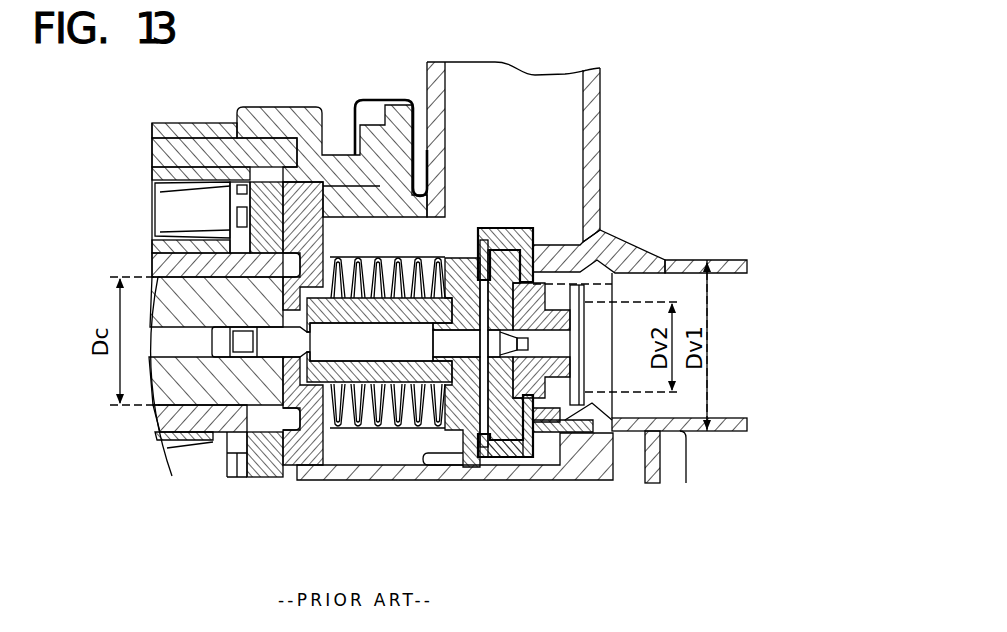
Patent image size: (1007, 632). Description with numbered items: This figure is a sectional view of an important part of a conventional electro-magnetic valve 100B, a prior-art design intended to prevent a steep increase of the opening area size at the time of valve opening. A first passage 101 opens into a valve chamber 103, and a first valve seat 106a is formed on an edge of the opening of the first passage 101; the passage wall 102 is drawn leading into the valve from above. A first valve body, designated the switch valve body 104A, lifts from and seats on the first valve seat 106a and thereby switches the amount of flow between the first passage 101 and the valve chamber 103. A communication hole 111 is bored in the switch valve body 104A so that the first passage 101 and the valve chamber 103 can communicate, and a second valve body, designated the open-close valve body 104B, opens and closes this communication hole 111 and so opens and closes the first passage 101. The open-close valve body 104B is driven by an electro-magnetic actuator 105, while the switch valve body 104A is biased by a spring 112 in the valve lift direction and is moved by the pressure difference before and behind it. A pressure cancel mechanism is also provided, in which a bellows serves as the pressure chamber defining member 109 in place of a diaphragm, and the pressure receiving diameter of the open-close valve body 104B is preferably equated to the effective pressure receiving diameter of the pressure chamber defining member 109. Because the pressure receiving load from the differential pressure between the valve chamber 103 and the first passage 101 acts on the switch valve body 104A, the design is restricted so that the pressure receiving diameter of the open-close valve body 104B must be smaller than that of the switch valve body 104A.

The electro-magnetic valve 100B is at (746, 119).
The first passage 101 is at (722, 384).
The pipe 102 is at (545, 118).
The valve chamber 103 is at (389, 452).
The switch valve body 104A is at (510, 460).
The open-close valve body 104B is at (466, 470).
The electro-magnetic actuator 105 is at (216, 426).
The first valve seat 106a is at (516, 232).
The pressure chamber defining member 109 is at (336, 430).
The communication hole 111 is at (575, 445).
The spring 112 is at (602, 247).